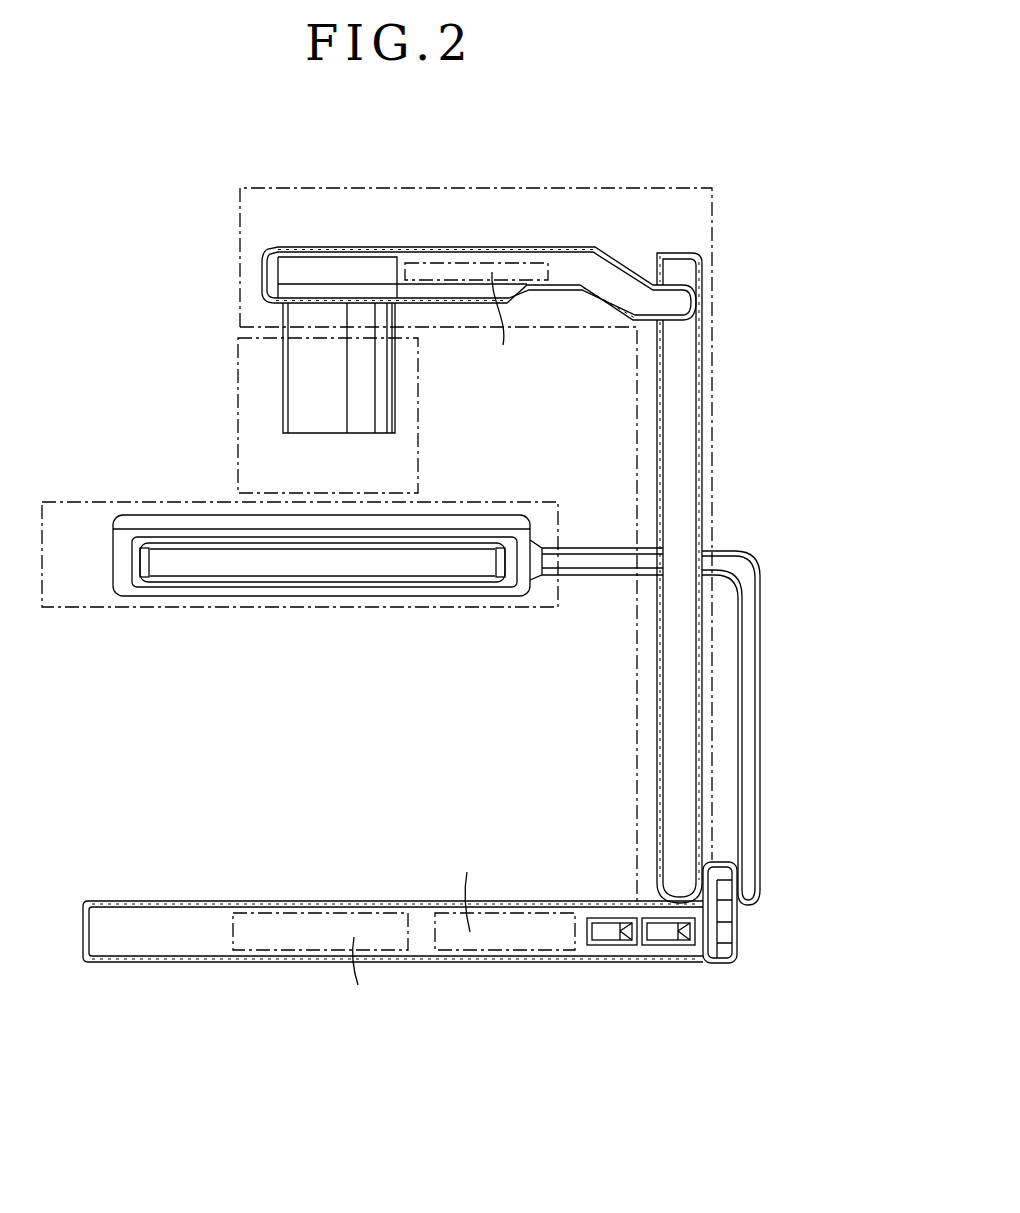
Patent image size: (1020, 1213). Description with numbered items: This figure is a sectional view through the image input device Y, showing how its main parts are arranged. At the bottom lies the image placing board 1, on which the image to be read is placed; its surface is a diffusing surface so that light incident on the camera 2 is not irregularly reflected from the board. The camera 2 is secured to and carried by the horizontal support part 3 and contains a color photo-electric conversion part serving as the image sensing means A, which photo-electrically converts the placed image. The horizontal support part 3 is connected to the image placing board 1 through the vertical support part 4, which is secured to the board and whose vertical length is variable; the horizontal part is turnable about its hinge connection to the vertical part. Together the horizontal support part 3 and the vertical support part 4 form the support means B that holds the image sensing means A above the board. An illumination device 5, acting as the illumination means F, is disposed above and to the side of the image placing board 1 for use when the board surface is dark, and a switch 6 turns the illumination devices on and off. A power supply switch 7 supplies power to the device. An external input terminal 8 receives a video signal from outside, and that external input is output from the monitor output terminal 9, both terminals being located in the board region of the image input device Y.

The image placing board 1 is at (283, 900).
The camera 2 is at (318, 420).
The horizontal support part 3 is at (458, 246).
The vertical support part 4 is at (683, 463).
The illumination device 5 is at (113, 575).
The switch 6 is at (606, 937).
The power supply switch 7 is at (660, 937).
The external input terminal 8 is at (727, 885).
The monitor output terminal 9 is at (727, 930).
The image sensing means A is at (420, 418).
The support means B is at (690, 188).
The illumination means F is at (408, 608).
The image input device Y is at (738, 328).